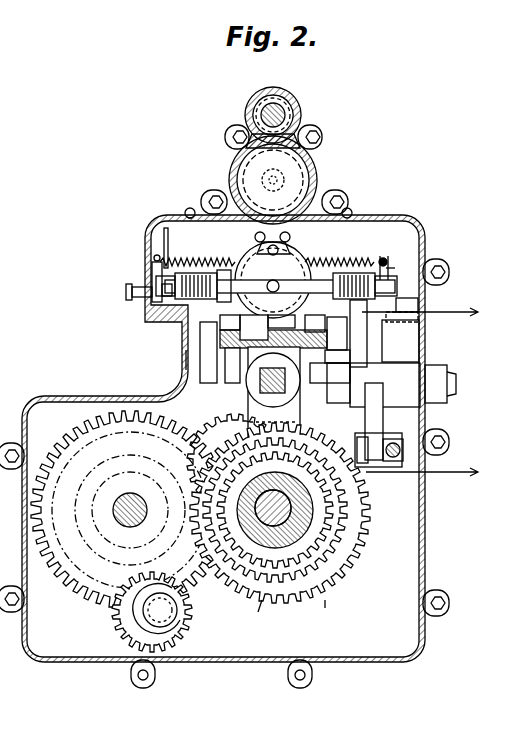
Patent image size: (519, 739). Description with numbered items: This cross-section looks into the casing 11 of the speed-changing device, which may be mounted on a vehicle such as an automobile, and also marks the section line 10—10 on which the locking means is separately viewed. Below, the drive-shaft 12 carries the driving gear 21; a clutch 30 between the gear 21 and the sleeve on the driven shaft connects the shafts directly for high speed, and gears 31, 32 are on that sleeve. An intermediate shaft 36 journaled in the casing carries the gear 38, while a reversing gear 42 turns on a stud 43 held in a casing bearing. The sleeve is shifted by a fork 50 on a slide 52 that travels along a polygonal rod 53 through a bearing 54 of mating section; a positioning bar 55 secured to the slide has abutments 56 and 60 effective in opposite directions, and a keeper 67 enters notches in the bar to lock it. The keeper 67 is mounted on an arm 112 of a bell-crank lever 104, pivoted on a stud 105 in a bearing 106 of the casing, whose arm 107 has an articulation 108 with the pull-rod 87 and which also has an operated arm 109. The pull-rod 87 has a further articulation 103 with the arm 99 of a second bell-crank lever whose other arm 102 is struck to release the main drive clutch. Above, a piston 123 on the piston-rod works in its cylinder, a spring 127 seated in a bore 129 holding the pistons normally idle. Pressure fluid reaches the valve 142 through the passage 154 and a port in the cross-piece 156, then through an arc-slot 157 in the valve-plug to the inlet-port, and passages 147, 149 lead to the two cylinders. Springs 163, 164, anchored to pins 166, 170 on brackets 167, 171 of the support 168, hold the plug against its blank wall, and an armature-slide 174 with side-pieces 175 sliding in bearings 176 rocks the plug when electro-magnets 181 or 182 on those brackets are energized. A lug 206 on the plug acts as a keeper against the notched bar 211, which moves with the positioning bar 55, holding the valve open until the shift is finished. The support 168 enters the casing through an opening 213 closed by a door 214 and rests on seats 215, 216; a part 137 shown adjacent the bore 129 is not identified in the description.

The section line 10 is at (430, 393).
The casing 11 is at (425, 228).
The drive-shaft 12 is at (257, 615).
The driving gear 21 is at (320, 526).
The clutch 30 is at (329, 615).
The gear 31 is at (325, 552).
The gear 32 is at (332, 576).
The intermediate shaft 36 is at (126, 495).
The gear 38 is at (150, 442).
The reversing gear 42 is at (180, 636).
The stud 43 is at (150, 614).
The fork 50 is at (274, 432).
The slide 52 is at (258, 400).
The rod 53 is at (235, 461).
The bearing 54 is at (272, 368).
The positioning bar 55 is at (204, 383).
The abutment 56 is at (230, 322).
The abutment 60 is at (315, 323).
The keeper 67 is at (337, 357).
The pull-rod 87 is at (393, 457).
The arm 99 is at (386, 342).
The arm 102 is at (186, 362).
The articulation 103 is at (355, 452).
The bell-crank lever 104 is at (358, 442).
The stud 105 is at (330, 403).
The bearing 106 is at (403, 385).
The arm 107 is at (383, 432).
The articulation 108 is at (403, 452).
The operated arm 109 is at (338, 333).
The arm 112 is at (330, 373).
The piston 123 is at (300, 178).
The spring 127 is at (282, 110).
The bore 129 is at (262, 107).
The bushing 137 is at (285, 116).
The valve 142 is at (339, 256).
The passage 147 is at (255, 235).
The passage 149 is at (291, 236).
The fluid passage 154 is at (292, 246).
The cross-piece 156 is at (266, 249).
The arc-slot 157 is at (273, 280).
The spring 163 is at (166, 252).
The spring 164 is at (382, 258).
The pin 166 is at (162, 258).
The bracket 167 is at (152, 268).
The support 168 is at (359, 333).
The pin 170 is at (388, 268).
The bracket 171 is at (366, 267).
The armature-slide 174 is at (222, 302).
The side-pieces 175 is at (273, 293).
The bearings 176 is at (273, 331).
The electro-magnets 181 is at (190, 300).
The electro-magnets 182 is at (396, 290).
The lug 206 is at (281, 322).
The bar 211 is at (230, 365).
The opening 213 is at (134, 296).
The door 214 is at (150, 224).
The seat 215 is at (165, 300).
The seat 216 is at (400, 318).